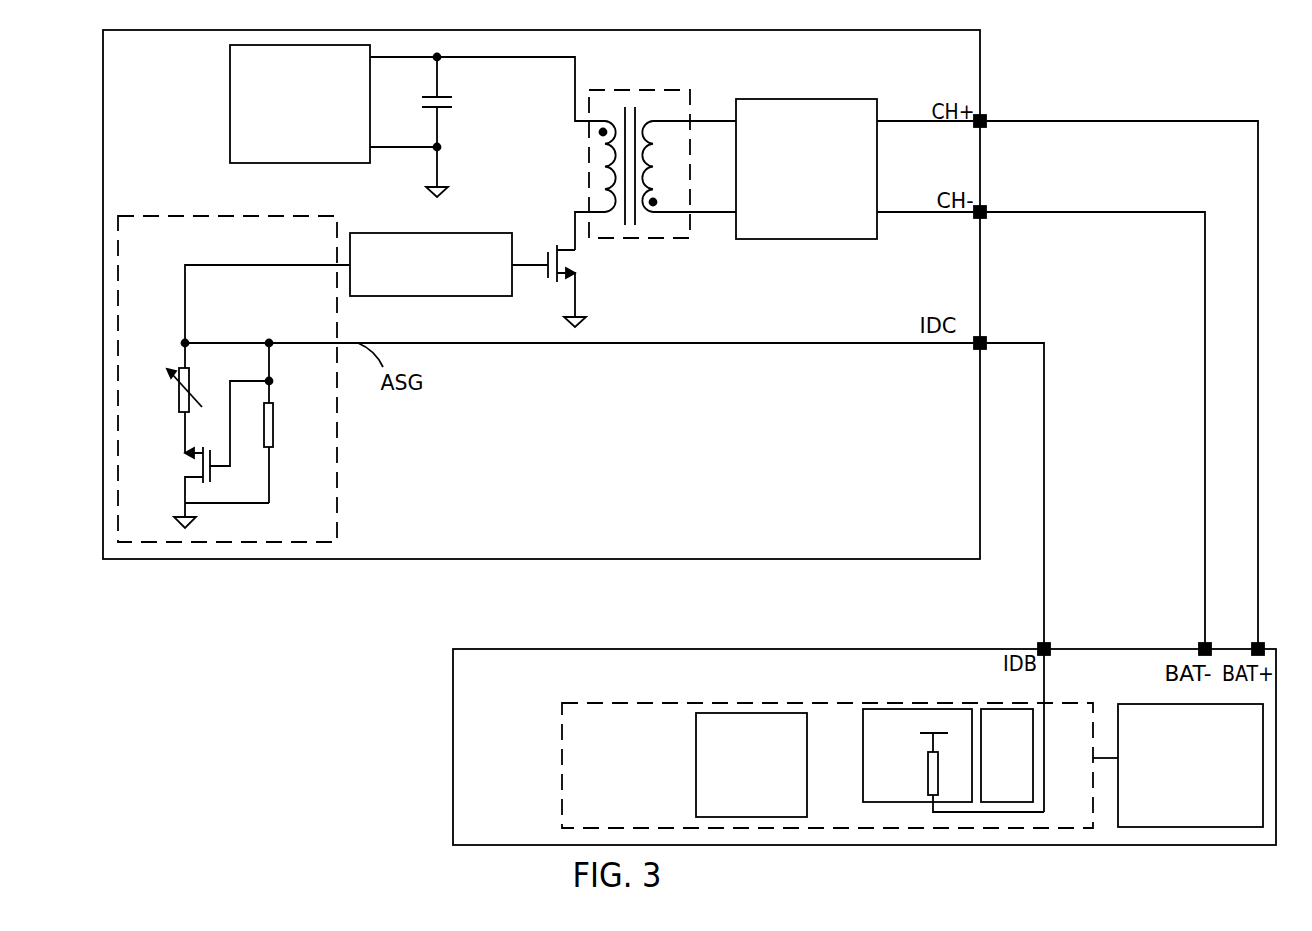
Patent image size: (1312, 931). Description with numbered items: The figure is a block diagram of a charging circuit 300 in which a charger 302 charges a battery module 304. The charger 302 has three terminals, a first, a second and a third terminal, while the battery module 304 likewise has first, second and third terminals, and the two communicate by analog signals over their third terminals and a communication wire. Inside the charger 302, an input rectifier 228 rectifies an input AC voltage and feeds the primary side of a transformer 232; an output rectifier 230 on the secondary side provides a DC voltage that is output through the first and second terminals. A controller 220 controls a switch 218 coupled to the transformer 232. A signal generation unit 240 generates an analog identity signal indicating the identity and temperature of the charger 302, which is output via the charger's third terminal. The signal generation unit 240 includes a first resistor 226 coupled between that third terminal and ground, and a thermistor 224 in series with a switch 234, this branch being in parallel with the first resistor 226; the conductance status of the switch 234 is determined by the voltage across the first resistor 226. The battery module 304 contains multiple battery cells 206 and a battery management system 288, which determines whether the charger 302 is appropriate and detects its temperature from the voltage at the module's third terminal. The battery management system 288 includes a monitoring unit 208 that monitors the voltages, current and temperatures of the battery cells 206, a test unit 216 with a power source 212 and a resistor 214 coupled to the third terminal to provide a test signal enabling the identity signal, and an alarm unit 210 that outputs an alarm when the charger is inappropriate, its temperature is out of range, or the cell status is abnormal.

The charging circuit 300 is at (313, 705).
The charger 302 is at (418, 559).
The battery module 304 is at (870, 649).
The input rectifier 228 is at (229, 102).
The output rectifier 230 is at (790, 99).
The transformer 232 is at (673, 238).
The controller 220 is at (415, 297).
The switch 218 is at (545, 270).
The signal generation unit 240 is at (337, 448).
The thermistor 224 is at (175, 399).
The first resistor 226 is at (273, 408).
The switch 234 is at (217, 470).
The battery management system 288 is at (610, 703).
The alarm unit 210 is at (733, 806).
The test unit 216 is at (863, 790).
The power source 212 is at (930, 733).
The resistor 214 is at (928, 783).
The monitoring unit 208 is at (990, 766).
The battery cells 206 is at (1173, 804).